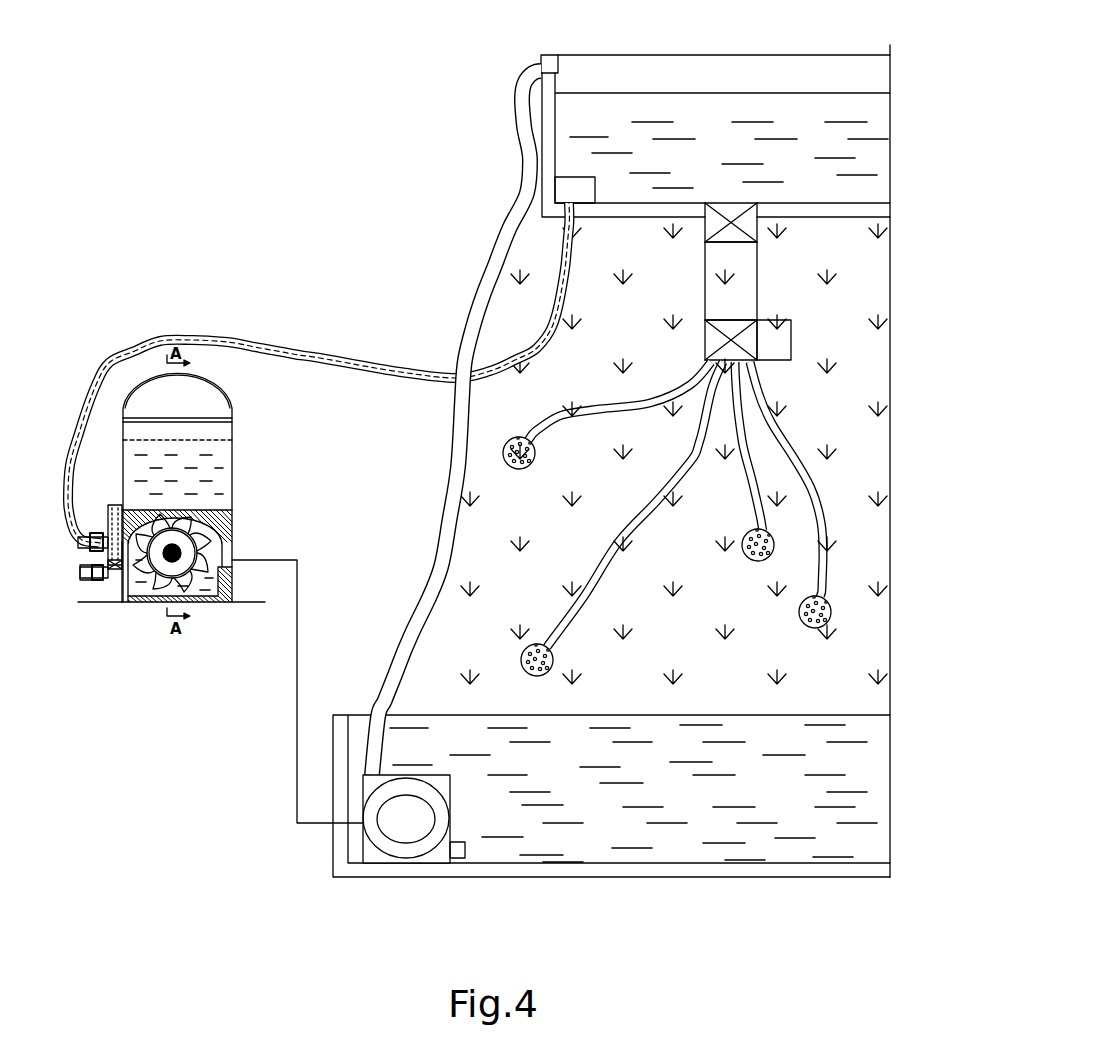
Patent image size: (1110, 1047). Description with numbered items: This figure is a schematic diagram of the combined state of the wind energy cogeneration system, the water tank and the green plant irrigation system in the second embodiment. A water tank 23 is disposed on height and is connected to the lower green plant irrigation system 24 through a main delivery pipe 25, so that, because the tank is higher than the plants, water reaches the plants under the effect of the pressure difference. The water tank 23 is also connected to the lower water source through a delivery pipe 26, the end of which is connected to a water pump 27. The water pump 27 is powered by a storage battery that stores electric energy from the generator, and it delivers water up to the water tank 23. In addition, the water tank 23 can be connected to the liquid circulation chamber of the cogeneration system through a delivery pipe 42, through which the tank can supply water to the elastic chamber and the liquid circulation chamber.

The water tank 23 is at (891, 119).
The green plant irrigation system 24 is at (820, 455).
The main delivery pipe 25 is at (747, 291).
The delivery pipe 26 is at (451, 523).
The water pump 27 is at (437, 837).
The delivery pipe 42 is at (361, 360).